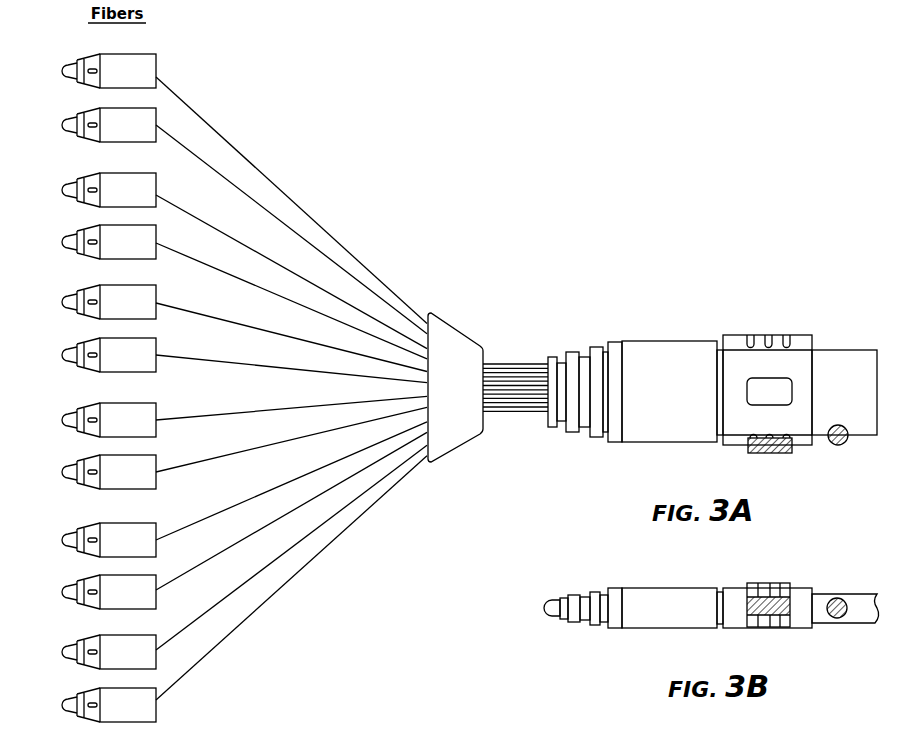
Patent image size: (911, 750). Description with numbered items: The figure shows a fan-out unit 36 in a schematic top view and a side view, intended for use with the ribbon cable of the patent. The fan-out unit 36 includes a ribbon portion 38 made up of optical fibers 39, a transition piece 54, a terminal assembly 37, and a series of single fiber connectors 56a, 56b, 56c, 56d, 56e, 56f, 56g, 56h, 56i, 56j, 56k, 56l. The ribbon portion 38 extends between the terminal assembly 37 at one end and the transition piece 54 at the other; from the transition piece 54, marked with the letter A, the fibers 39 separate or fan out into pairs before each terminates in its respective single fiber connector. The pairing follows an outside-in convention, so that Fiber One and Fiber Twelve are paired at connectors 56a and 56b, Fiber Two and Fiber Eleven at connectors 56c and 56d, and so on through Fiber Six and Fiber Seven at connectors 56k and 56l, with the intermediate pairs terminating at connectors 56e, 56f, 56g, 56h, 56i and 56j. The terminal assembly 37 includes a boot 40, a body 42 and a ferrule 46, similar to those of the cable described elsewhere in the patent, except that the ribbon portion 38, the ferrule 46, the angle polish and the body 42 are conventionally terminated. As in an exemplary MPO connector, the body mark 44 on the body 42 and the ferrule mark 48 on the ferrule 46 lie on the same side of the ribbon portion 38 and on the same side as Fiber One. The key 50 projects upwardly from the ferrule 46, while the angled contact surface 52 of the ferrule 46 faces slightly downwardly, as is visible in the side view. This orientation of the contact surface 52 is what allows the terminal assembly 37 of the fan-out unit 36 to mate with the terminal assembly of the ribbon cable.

In FIG. 3A, the fan-out unit 36 is at (682, 336).
In FIG. 3A, the terminal assembly 37 is at (715, 362).
In FIG. 3A, the ribbon portion 38 is at (556, 345).
In FIG. 3A, the optical fibers 39 is at (497, 365).
In FIG. 3A, the boot 40 is at (660, 345).
In FIG. 3B, the boot 40 is at (633, 600).
In FIG. 3A, the body 42 is at (802, 373).
In FIG. 3B, the body 42 is at (782, 569).
In FIG. 3A, the body mark 44 is at (768, 455).
In FIG. 3B, the body mark 44 is at (778, 598).
In FIG. 3A, the ferrule 46 is at (847, 386).
In FIG. 3A, the ferrule mark 48 is at (838, 447).
In FIG. 3B, the ferrule mark 48 is at (840, 620).
In FIG. 3A, the key 50 is at (782, 386).
In FIG. 3B, the key 50 is at (766, 598).
In FIG. 3B, the angled contact surface 52 is at (844, 631).
In FIG. 3A, the transition piece 54 is at (452, 325).
In FIG. 3A, the single fiber connector 56a is at (107, 62).
In FIG. 3A, the single fiber connector 56b is at (107, 116).
In FIG. 3A, the single fiber connector 56c is at (107, 181).
In FIG. 3A, the single fiber connector 56d is at (107, 233).
In FIG. 3A, the single fiber connector 56e is at (107, 293).
In FIG. 3A, the single fiber connector 56f is at (107, 346).
In FIG. 3A, the single fiber connector 56g is at (107, 411).
In FIG. 3A, the single fiber connector 56h is at (107, 463).
In FIG. 3A, the single fiber connector 56i is at (107, 531).
In FIG. 3A, the single fiber connector 56j is at (107, 583).
In FIG. 3A, the single fiber connector 56k is at (107, 643).
In FIG. 3A, the single fiber connector 56l is at (107, 696).